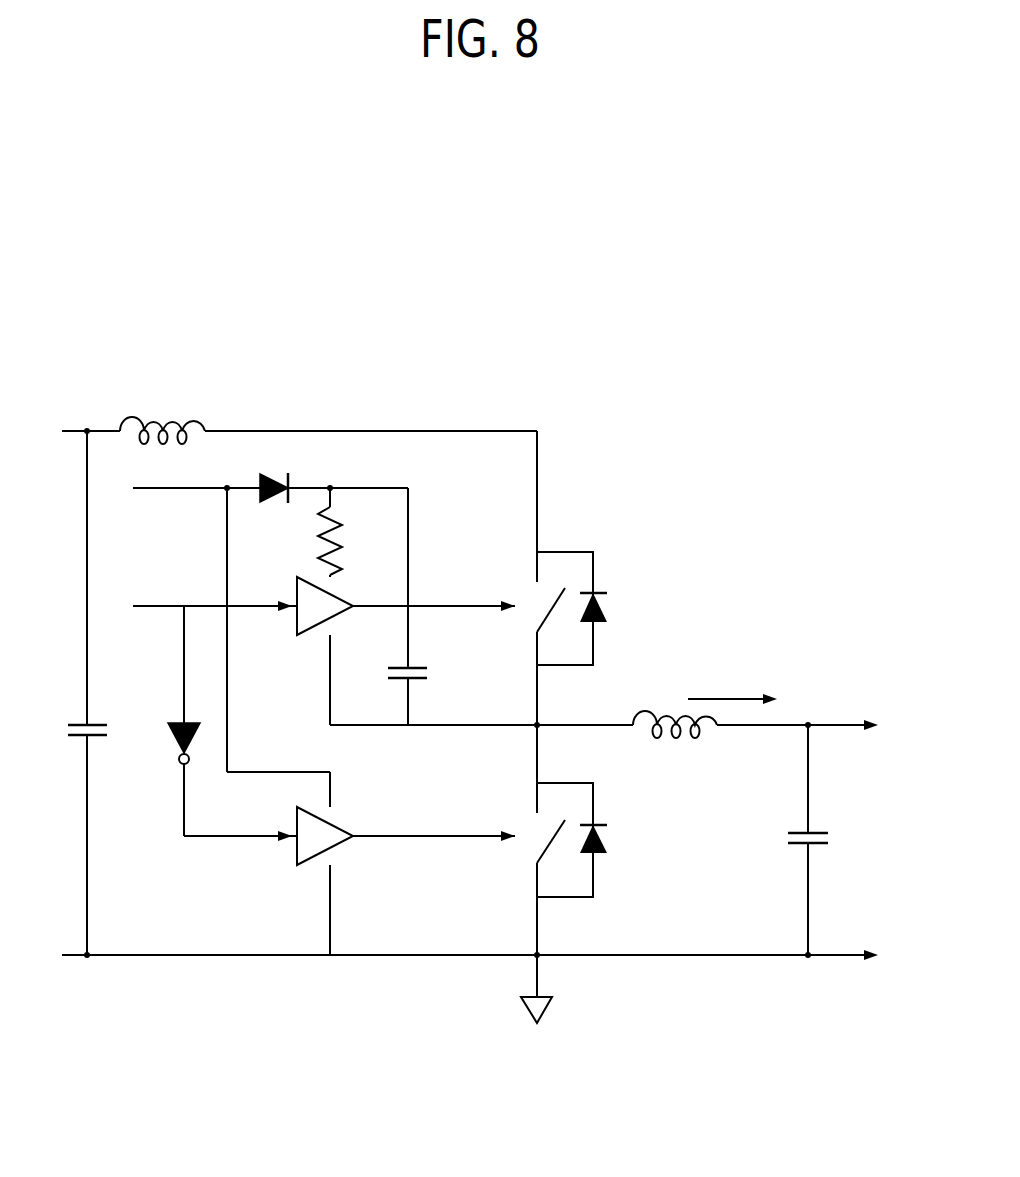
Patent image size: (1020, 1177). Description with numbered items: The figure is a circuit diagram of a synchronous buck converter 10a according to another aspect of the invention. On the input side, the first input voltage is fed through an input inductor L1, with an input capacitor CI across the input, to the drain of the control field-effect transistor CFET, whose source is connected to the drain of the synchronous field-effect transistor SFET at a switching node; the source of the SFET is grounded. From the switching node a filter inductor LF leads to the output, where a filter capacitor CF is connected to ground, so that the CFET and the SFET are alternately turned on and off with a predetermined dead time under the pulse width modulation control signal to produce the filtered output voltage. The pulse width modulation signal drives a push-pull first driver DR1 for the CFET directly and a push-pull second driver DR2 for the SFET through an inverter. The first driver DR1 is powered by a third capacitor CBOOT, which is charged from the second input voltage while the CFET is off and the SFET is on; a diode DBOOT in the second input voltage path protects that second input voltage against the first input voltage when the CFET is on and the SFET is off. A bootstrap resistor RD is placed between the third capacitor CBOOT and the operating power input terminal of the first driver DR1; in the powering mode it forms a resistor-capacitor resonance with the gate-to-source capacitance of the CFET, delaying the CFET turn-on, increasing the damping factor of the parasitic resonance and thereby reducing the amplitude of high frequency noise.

The synchronous buck converter 10a is at (757, 441).
The input inductor L1 is at (162, 416).
The input capacitor CI is at (72, 728).
The diode DBOOT is at (274, 476).
The bootstrap resistor RD is at (349, 532).
The first driver DR1 is at (310, 621).
The second driver DR2 is at (310, 851).
The third capacitor CBOOT is at (441, 606).
The control field-effect transistor CFET is at (606, 620).
The synchronous field-effect transistor SFET is at (606, 852).
The filter inductor LF is at (675, 739).
The filter capacitor CF is at (825, 840).